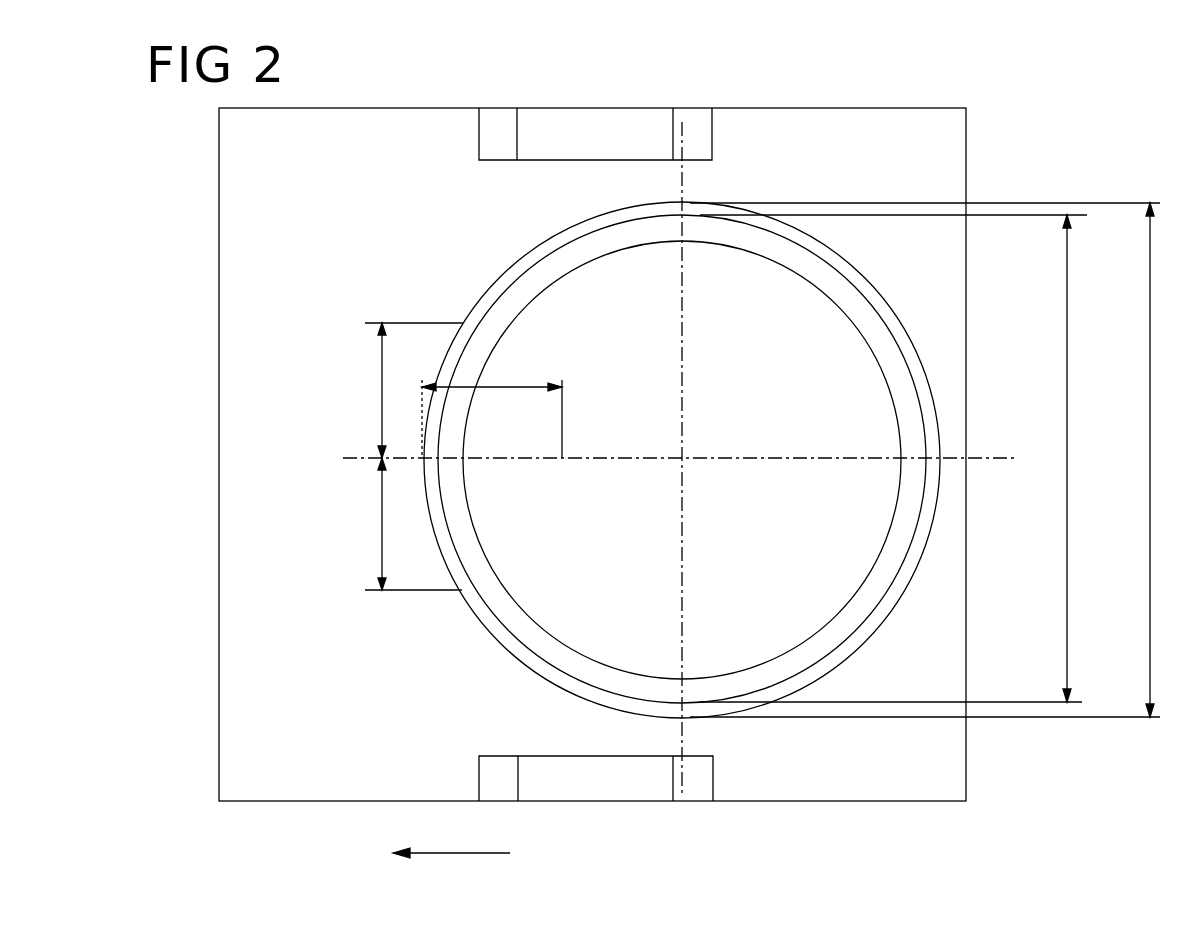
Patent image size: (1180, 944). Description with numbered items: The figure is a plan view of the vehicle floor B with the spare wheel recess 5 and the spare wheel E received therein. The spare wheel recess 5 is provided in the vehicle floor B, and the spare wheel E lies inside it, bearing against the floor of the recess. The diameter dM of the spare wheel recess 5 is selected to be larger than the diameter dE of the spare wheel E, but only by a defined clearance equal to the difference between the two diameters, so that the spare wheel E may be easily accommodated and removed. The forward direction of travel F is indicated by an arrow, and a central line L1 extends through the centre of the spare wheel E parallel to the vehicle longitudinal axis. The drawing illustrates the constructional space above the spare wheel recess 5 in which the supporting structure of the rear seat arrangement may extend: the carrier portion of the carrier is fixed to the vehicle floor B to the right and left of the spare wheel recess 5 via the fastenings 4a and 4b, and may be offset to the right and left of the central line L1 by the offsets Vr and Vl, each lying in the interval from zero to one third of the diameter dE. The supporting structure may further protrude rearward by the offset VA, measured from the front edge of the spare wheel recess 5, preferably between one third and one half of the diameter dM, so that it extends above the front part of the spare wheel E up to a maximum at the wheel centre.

The fastening 4a is at (600, 789).
The fastening 4b is at (623, 122).
The spare wheel recess 5 is at (705, 203).
The vehicle floor B is at (282, 192).
The spare wheel E is at (633, 367).
The central line L1 is at (355, 455).
The offset Vr is at (409, 390).
The offset Vl is at (408, 524).
The offset VA is at (492, 408).
The diameter of the spare wheel dE is at (893, 458).
The diameter of the spare wheel recess dM is at (925, 460).
The direction of travel F is at (451, 866).